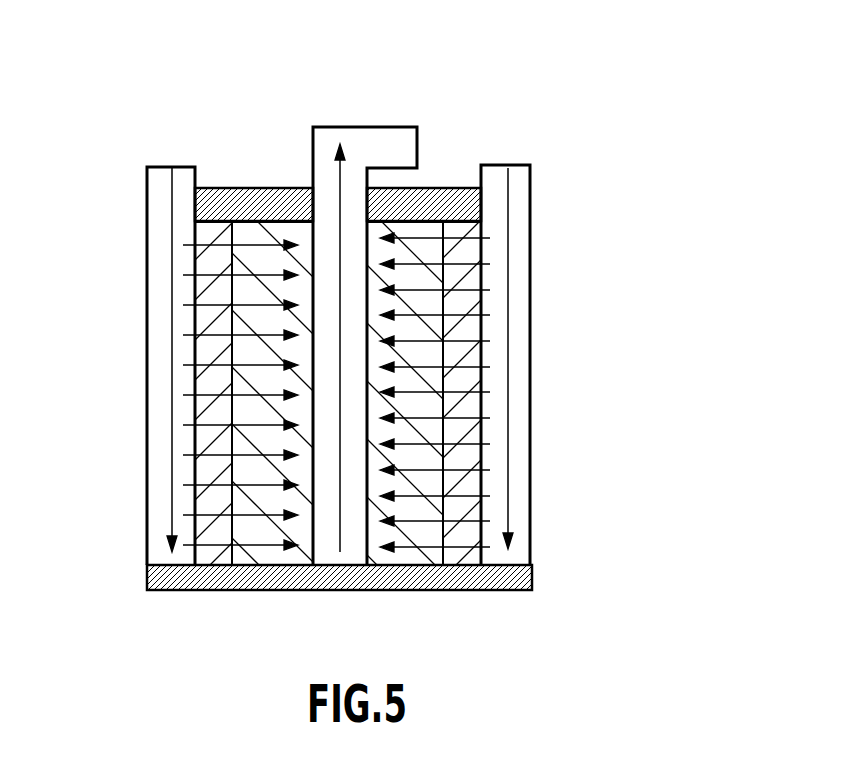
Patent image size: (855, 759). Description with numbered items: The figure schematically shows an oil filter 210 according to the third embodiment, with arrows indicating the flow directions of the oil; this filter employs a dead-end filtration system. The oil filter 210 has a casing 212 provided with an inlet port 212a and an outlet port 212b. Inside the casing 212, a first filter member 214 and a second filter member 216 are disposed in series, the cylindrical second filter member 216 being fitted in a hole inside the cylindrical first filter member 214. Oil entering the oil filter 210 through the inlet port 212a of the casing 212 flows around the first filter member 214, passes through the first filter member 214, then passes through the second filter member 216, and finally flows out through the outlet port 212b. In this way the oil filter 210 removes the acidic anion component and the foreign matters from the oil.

The oil filter 210 is at (657, 387).
The casing 212 is at (531, 518).
The inlet port 212a is at (147, 180).
The outlet port 212b is at (407, 142).
The first filter member 214 is at (470, 330).
The second filter member 216 is at (432, 400).